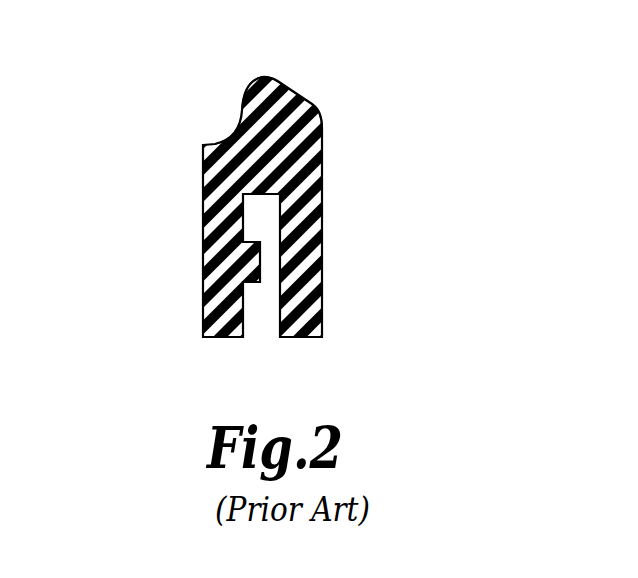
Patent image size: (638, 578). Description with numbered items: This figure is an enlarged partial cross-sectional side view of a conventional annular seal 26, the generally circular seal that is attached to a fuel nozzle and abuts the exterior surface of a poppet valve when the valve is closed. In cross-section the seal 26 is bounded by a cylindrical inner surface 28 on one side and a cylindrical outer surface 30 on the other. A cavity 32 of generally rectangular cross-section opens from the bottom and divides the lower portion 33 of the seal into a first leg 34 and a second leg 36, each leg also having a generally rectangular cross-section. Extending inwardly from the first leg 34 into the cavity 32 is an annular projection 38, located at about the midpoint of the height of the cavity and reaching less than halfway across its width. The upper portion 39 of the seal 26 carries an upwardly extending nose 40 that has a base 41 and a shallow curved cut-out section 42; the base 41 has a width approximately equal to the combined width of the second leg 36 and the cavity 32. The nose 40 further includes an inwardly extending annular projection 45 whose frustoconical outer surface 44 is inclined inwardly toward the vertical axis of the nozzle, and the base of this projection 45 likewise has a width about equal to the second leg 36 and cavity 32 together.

The annular seal 26 is at (426, 50).
The cylindrical inner surface 28 is at (203, 288).
The cylindrical outer surface 30 is at (322, 228).
The cavity 32 is at (256, 334).
The lower portion 33 is at (362, 268).
The first leg 34 is at (222, 327).
The second leg 36 is at (297, 327).
The annular projection 38 is at (233, 212).
The upper portion 39 is at (160, 118).
The nose 40 is at (280, 80).
The base 41 is at (316, 110).
The curved cut-out section 42 is at (236, 124).
The frustoconical outer surface 44 is at (305, 90).
The annular projection 45 is at (250, 88).